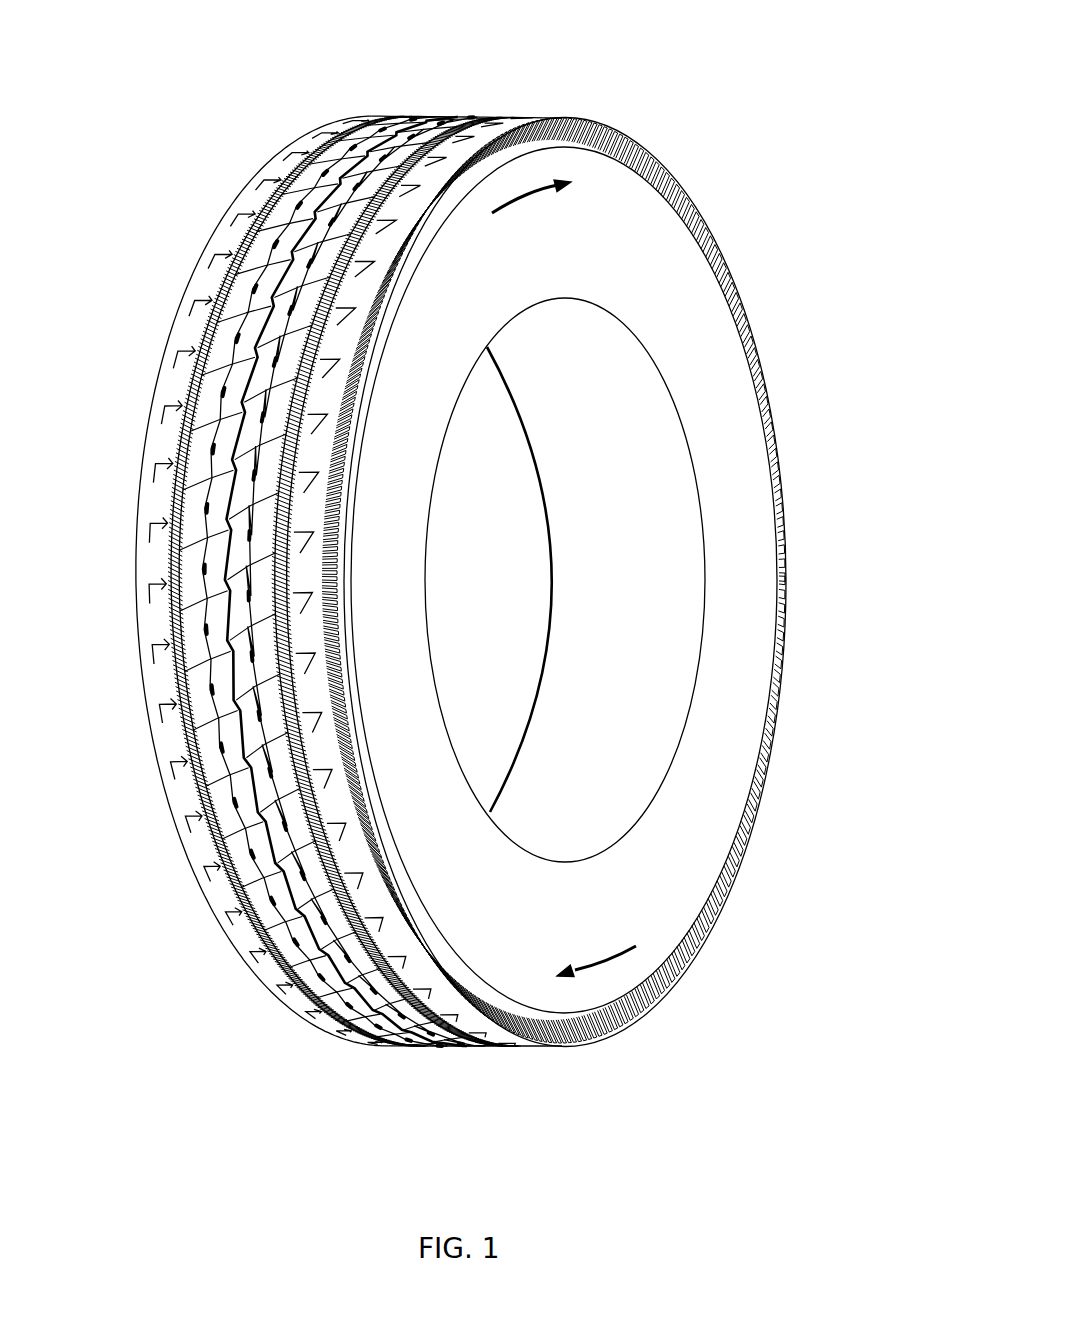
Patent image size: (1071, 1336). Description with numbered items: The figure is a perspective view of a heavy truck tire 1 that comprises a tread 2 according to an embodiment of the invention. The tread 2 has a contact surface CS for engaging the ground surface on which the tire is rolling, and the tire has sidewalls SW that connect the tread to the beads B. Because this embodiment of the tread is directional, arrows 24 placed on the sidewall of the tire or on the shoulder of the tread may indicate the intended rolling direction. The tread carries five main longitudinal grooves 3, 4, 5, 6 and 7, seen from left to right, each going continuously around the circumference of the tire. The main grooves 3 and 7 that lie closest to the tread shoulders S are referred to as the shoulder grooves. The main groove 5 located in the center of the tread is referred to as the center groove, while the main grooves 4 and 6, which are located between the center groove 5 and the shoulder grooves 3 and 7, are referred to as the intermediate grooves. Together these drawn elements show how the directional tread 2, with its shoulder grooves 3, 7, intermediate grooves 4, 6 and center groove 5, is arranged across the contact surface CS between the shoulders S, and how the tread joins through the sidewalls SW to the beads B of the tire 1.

The heavy truck tire 1 is at (171, 150).
The tread 2 is at (394, 104).
The shoulder groove 3 is at (213, 333).
The intermediate groove 4 is at (227, 382).
The center groove 5 is at (240, 418).
The intermediate groove 6 is at (257, 475).
The shoulder groove 7 is at (282, 518).
The tread shoulder S is at (200, 265).
The sidewall SW is at (692, 305).
The bead B is at (540, 465).
The arrow 24 is at (525, 198).
The contact surface CS is at (449, 114).